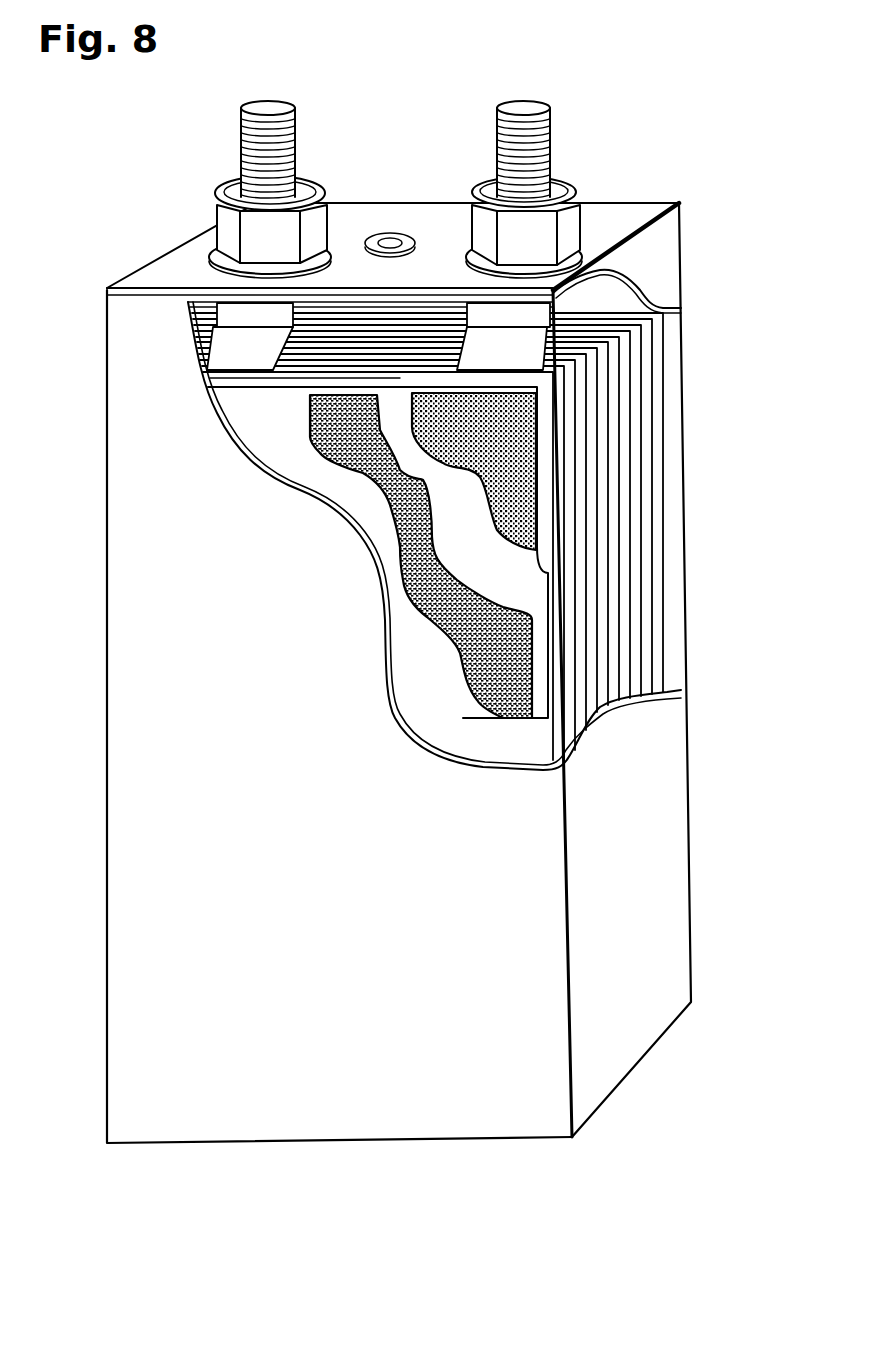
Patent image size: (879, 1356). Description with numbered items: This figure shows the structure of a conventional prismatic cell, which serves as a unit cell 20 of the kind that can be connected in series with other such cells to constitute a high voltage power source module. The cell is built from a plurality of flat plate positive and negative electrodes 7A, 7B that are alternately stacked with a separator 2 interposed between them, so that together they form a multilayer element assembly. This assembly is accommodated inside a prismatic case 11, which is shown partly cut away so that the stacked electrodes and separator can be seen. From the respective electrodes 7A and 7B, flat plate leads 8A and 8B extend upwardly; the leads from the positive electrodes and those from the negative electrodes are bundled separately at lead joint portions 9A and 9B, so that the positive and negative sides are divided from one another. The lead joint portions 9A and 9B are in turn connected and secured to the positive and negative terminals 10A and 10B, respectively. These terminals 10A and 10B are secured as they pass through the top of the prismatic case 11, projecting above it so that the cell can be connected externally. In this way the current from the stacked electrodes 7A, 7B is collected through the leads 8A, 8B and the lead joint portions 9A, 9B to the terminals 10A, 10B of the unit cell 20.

The separator 2 is at (518, 588).
The positive electrode 7A is at (518, 443).
The negative electrode 7B is at (440, 560).
The lead 8A is at (232, 350).
The lead 8B is at (612, 318).
The lead joint portion 9A is at (252, 313).
The lead joint portion 9B is at (530, 313).
The positive terminal 10A is at (245, 153).
The negative terminal 10B is at (548, 149).
The prismatic case 11 is at (663, 808).
The unit cell 20 is at (425, 1226).